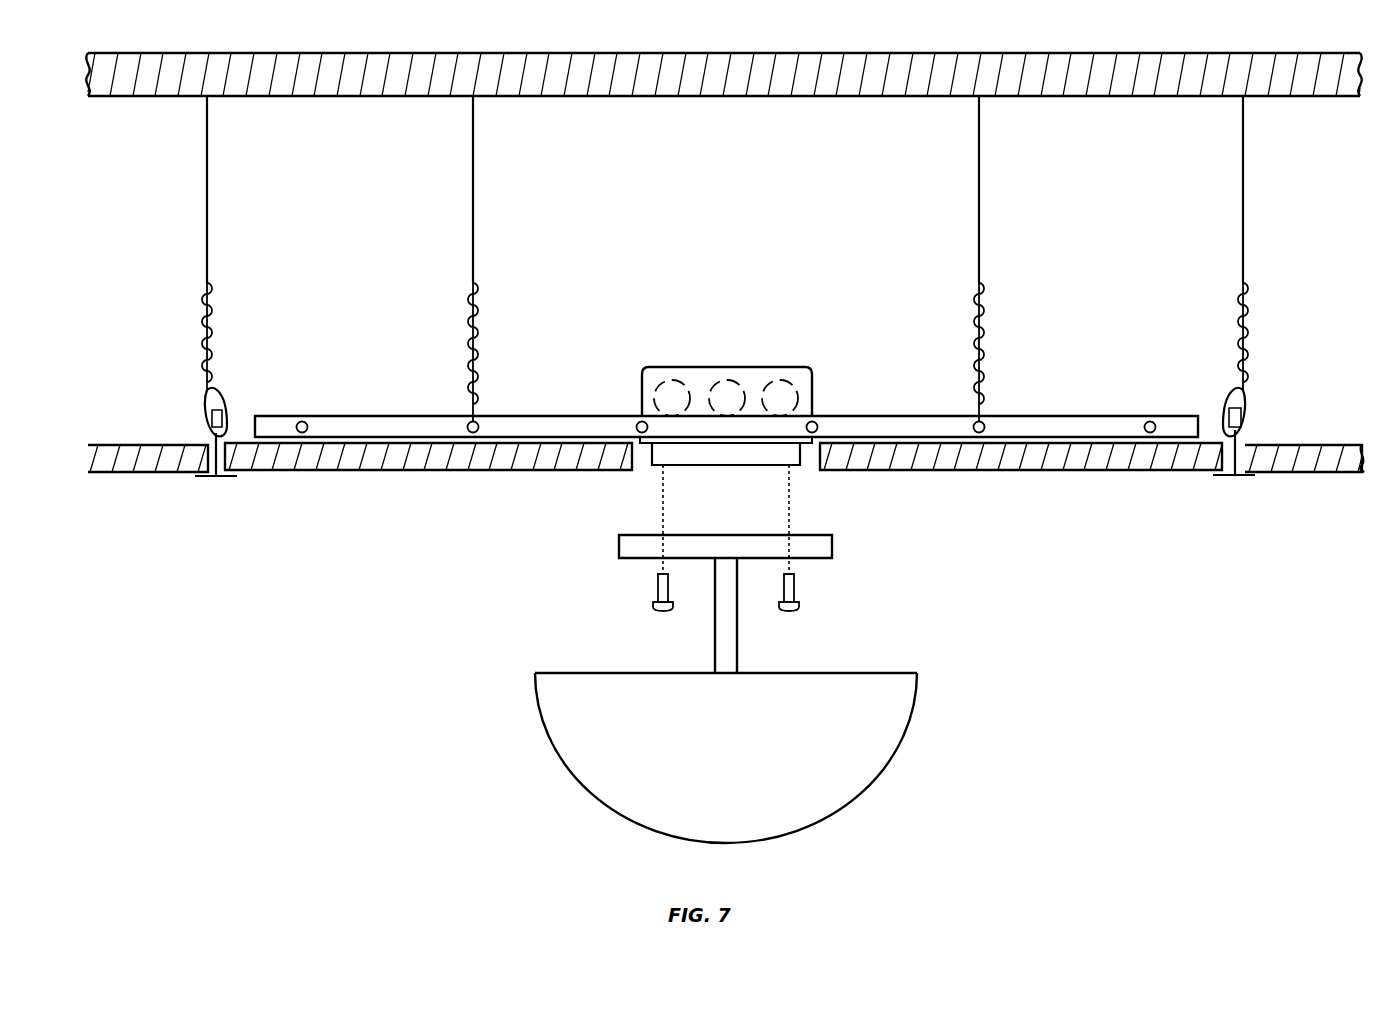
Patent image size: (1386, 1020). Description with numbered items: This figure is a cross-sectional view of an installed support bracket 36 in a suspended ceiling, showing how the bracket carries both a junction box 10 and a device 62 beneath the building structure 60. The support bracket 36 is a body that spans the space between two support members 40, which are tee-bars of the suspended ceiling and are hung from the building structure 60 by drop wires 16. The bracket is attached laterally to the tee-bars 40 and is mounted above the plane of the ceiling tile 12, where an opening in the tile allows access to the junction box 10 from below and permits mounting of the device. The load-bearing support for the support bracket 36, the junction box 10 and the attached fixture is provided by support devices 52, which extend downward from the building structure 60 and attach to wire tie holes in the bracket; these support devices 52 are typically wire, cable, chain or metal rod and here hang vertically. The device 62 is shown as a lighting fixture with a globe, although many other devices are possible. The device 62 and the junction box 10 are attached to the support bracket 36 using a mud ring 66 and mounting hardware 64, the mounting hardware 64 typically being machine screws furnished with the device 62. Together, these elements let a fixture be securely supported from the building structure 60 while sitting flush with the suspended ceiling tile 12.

The junction box 10 is at (725, 367).
The ceiling tile 12 is at (1050, 536).
The drop wire 16 is at (1293, 185).
The support bracket 36 is at (915, 412).
The support member 40 is at (1200, 535).
The support device 52 is at (1030, 186).
The building structure 60 is at (745, 104).
The device 62 is at (925, 719).
The mounting hardware 64 is at (840, 578).
The mud ring 66 is at (767, 473).